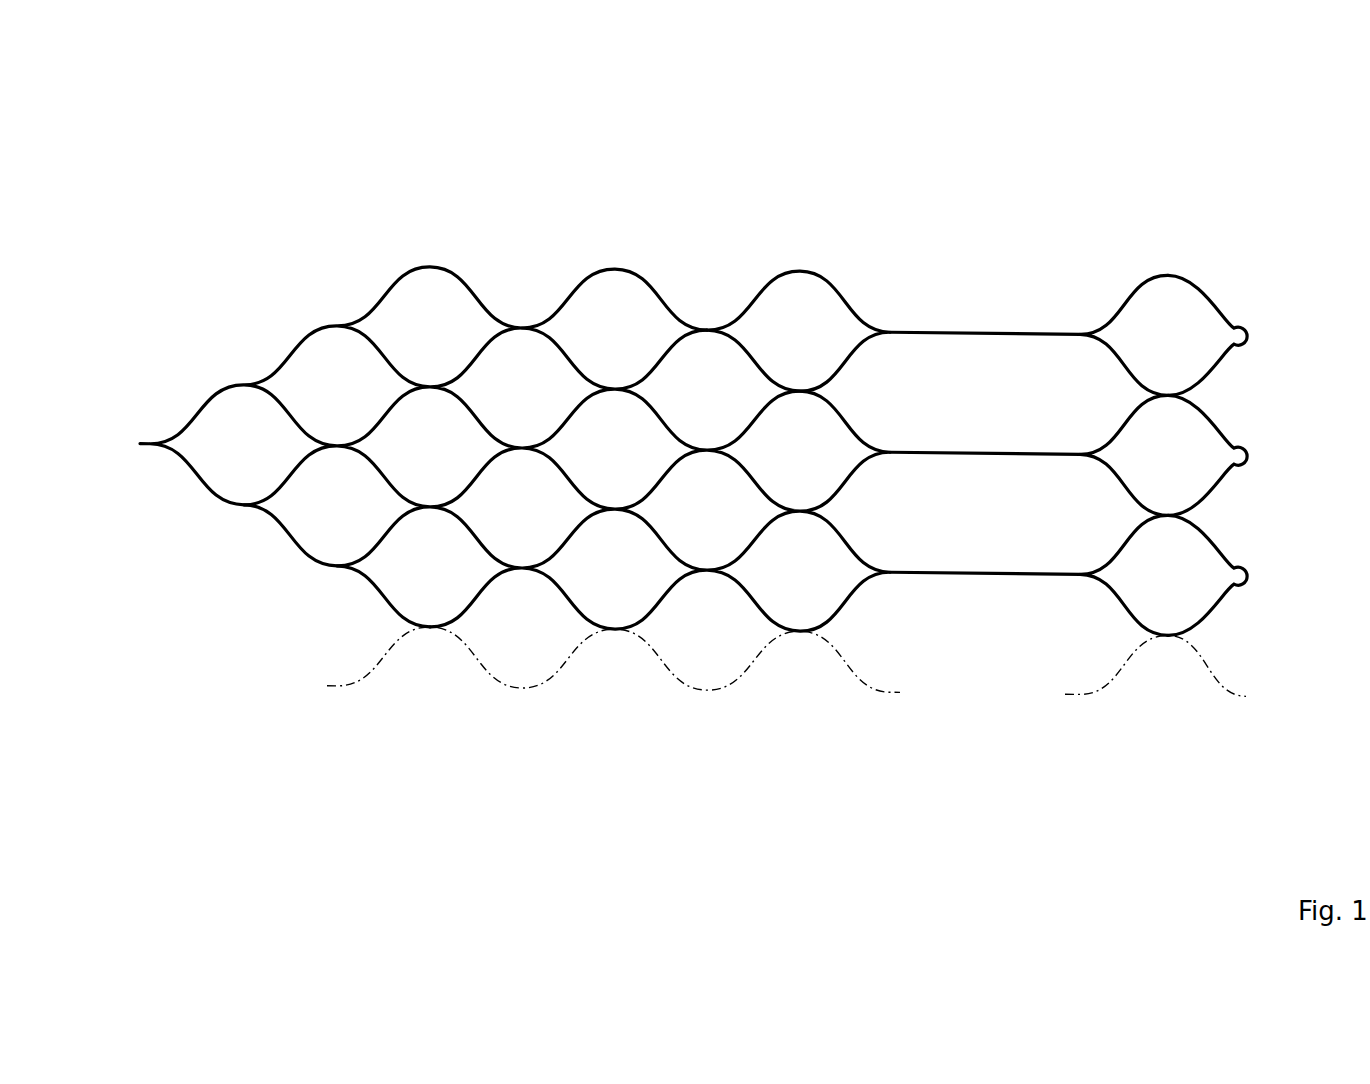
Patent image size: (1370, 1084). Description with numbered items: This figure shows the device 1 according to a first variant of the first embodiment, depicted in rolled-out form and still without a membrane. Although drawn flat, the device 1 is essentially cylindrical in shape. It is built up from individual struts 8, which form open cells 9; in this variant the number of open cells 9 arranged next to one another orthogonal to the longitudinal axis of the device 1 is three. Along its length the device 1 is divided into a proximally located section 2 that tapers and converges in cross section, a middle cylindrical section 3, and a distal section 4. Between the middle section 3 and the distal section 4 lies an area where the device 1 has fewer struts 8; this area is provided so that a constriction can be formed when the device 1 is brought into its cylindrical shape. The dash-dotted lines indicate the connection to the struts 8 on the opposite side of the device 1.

The device 1 is at (509, 228).
The proximal section 2 is at (282, 653).
The middle section 3 is at (582, 728).
The distal section 4 is at (1147, 731).
The strut 8 is at (623, 258).
The open cell 9 is at (799, 314).